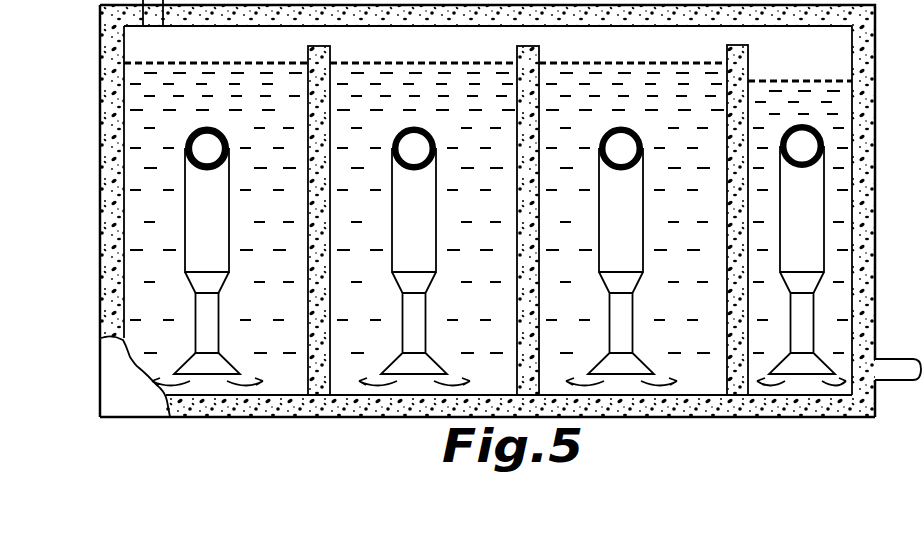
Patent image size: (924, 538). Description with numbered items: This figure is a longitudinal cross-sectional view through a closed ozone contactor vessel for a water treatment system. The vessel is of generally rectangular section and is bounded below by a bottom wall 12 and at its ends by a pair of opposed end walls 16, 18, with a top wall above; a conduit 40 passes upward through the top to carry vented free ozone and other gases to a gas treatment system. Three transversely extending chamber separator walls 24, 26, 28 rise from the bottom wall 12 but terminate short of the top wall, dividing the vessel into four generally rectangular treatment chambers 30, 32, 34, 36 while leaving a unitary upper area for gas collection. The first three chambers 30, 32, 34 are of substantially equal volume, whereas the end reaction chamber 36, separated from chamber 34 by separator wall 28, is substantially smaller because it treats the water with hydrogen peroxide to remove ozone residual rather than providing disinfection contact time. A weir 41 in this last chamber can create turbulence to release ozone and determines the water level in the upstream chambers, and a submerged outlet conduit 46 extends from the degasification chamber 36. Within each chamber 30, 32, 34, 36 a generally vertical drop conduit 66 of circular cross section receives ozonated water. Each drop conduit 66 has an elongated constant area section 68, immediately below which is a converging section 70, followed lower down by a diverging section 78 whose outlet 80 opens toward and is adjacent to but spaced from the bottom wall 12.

The bottom wall 12 is at (425, 408).
The end wall 16 is at (107, 90).
The end wall 18 is at (865, 272).
The chamber separator wall 24 is at (330, 101).
The chamber separator wall 26 is at (539, 101).
The chamber separator wall 28 is at (748, 121).
The treatment chamber 30 is at (290, 385).
The treatment chamber 32 is at (345, 385).
The treatment chamber 34 is at (705, 374).
The reaction chamber 36 is at (829, 263).
The conduit 40 is at (97, 2).
The weir 41 is at (838, 106).
The outlet conduit 46 is at (888, 358).
The drop conduit 66 is at (531, 288).
The constant area section 68 is at (215, 187).
The converging section 70 is at (222, 286).
The diverging section 78 is at (232, 363).
The outlet 80 is at (207, 375).